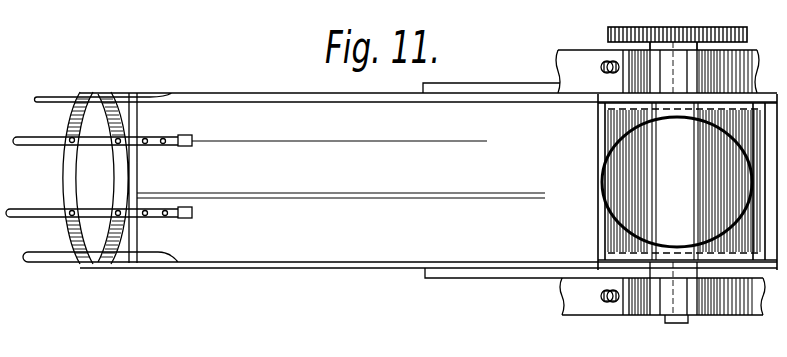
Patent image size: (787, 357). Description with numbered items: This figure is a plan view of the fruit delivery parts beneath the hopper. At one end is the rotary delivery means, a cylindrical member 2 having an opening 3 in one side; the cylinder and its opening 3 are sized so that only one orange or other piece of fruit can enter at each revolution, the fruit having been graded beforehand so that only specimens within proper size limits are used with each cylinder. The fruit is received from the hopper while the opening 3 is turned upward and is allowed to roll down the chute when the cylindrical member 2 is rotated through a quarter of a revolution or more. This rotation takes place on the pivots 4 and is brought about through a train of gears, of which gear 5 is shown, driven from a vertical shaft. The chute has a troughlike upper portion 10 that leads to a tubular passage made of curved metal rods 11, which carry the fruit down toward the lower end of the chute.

The cylindrical member 2 is at (598, 125).
The opening 3 is at (627, 186).
The pivots 4 is at (624, 30).
The gear 5 is at (738, 28).
The troughlike upper portion 10 is at (262, 92).
The curved metal rods 11 is at (30, 206).